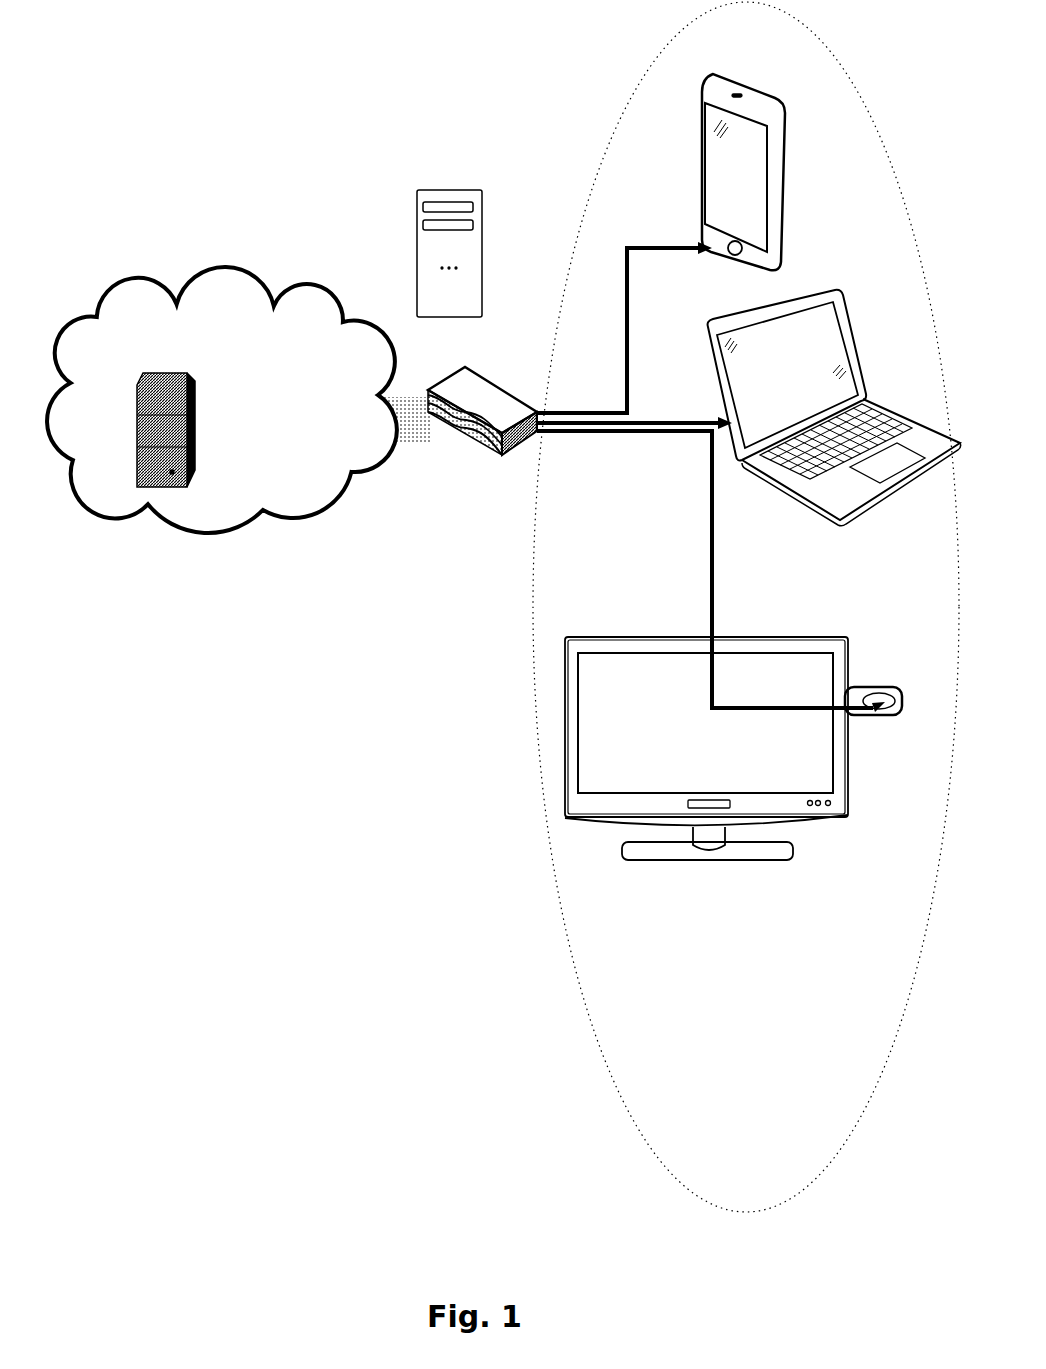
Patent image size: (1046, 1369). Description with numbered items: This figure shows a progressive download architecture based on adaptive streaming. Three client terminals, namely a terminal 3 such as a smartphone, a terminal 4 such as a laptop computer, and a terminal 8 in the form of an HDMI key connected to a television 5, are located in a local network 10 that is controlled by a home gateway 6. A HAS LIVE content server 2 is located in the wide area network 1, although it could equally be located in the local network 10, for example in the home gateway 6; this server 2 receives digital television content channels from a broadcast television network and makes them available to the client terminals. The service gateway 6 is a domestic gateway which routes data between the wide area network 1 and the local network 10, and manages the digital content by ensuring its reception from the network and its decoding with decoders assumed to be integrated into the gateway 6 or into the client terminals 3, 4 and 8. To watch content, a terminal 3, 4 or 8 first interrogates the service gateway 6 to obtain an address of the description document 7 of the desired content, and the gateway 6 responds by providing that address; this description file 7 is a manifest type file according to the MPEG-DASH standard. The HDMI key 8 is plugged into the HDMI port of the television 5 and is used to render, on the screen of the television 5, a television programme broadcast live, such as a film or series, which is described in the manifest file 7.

The wide area network 1 is at (222, 265).
The HAS LIVE content server 2 is at (196, 371).
The terminal 3 is at (762, 108).
The terminal 4 is at (826, 322).
The television 5 is at (733, 793).
The home gateway 6 is at (495, 372).
The description document 7 is at (487, 222).
The HDMI key 8 is at (876, 717).
The local network 10 is at (537, 718).